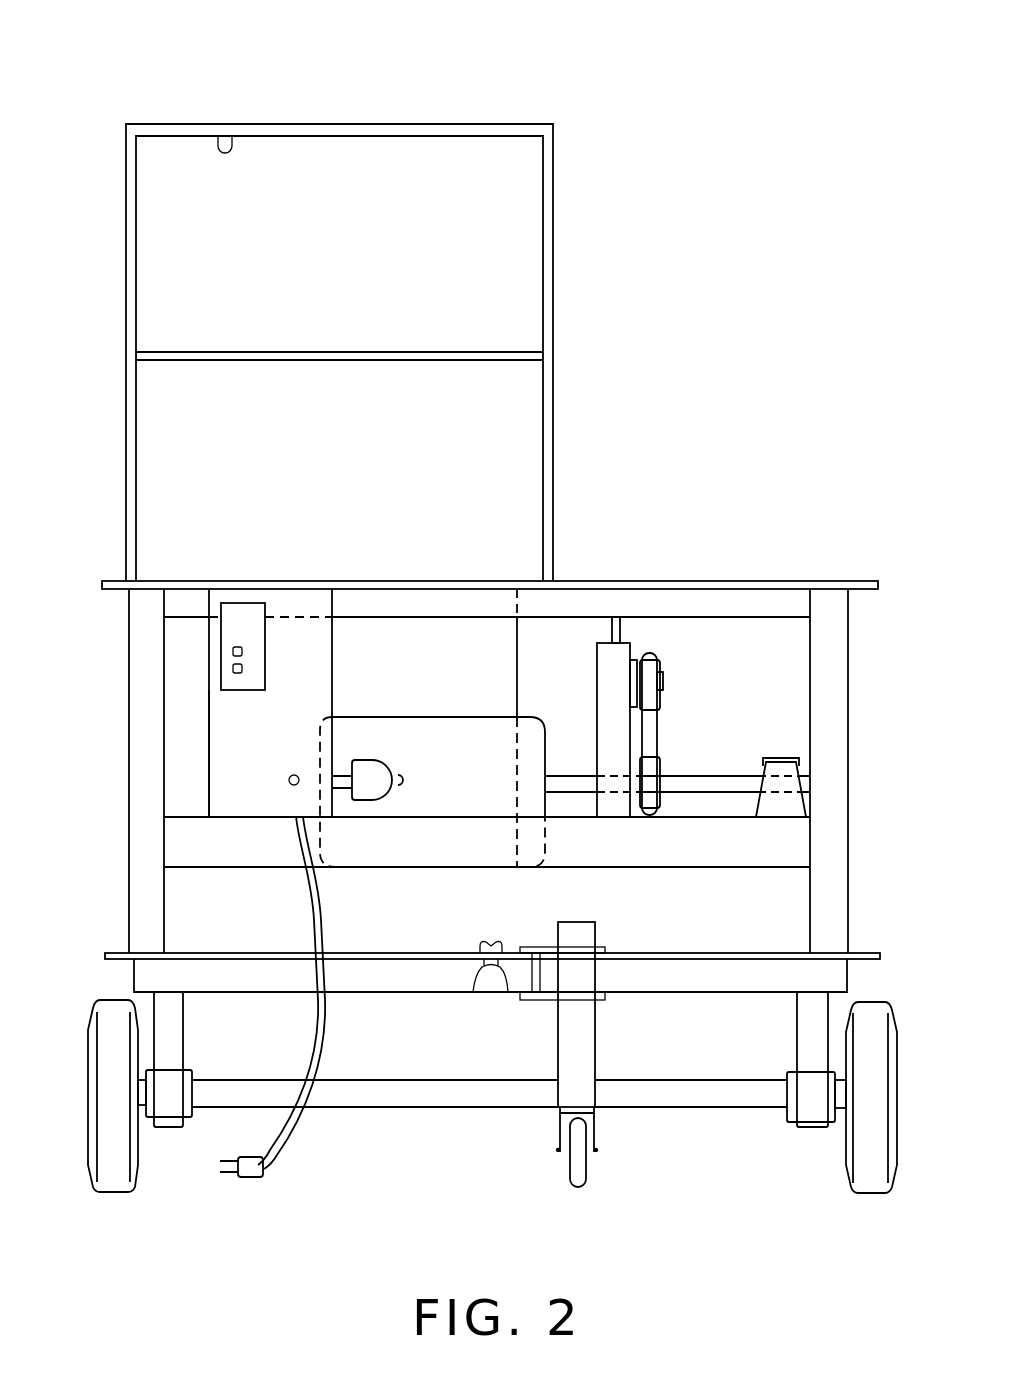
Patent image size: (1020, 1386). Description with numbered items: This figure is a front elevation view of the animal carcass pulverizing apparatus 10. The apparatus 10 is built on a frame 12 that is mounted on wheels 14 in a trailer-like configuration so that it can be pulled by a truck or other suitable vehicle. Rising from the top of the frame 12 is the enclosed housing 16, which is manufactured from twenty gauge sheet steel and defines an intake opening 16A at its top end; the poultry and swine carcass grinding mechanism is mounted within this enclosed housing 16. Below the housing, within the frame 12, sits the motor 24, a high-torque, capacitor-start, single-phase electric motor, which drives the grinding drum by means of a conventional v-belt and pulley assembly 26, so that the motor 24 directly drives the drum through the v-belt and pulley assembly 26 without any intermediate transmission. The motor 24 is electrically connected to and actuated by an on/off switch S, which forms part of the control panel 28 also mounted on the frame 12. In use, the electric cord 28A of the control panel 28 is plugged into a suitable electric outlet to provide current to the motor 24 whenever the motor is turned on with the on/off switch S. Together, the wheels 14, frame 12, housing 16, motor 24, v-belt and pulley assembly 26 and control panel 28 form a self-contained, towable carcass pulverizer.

The pulverizing apparatus 10 is at (697, 64).
The frame 12 is at (129, 853).
The wheels 14 is at (590, 1178).
The enclosed housing 16 is at (553, 326).
The intake opening 16A is at (219, 139).
The motor 24 is at (472, 776).
The v-belt and pulley assembly 26 is at (660, 734).
The control panel 28 is at (272, 746).
The electric cord 28A is at (323, 1043).
The on/off switch S is at (243, 641).